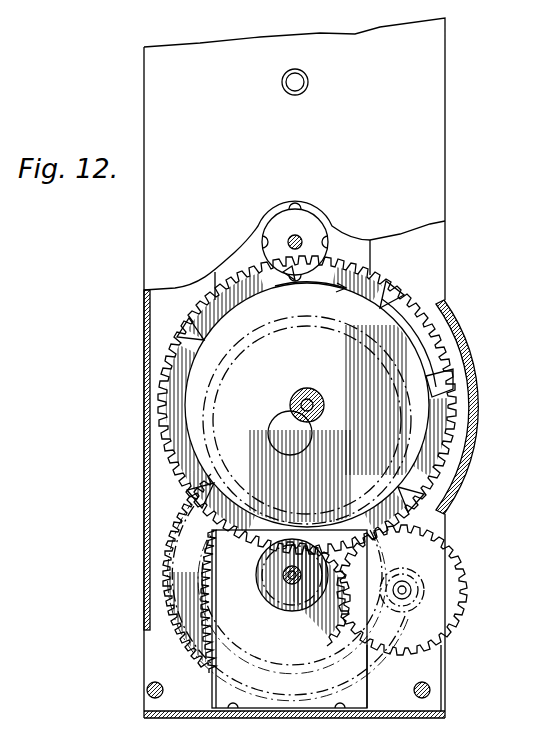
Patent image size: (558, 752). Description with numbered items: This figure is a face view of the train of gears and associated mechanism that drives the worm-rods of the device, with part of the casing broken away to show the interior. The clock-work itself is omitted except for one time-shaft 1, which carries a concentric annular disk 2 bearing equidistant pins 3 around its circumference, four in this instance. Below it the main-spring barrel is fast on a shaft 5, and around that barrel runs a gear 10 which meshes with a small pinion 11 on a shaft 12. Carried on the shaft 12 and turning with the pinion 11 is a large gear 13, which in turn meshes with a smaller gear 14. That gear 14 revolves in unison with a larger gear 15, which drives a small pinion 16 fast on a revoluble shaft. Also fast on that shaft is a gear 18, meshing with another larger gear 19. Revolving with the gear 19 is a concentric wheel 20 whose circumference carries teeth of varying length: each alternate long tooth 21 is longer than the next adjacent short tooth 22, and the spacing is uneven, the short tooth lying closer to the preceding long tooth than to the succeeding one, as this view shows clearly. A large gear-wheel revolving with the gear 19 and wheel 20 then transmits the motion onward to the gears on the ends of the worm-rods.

The time-shaft 1 is at (302, 238).
The annular disk 2 is at (302, 236).
The pins 3 is at (266, 246).
The shaft 5 is at (287, 578).
The gear 10 is at (180, 541).
The small pinion 11 is at (270, 419).
The shaft 12 is at (278, 433).
The large gear 13 is at (430, 372).
The smaller gear 14 is at (276, 606).
The larger gear 15 is at (200, 572).
The small pinion 16 is at (412, 606).
The gear 18 is at (452, 572).
The larger gear 19 is at (421, 333).
The wheel 20 is at (307, 405).
The long tooth 21 is at (186, 328).
The short tooth 22 is at (284, 273).